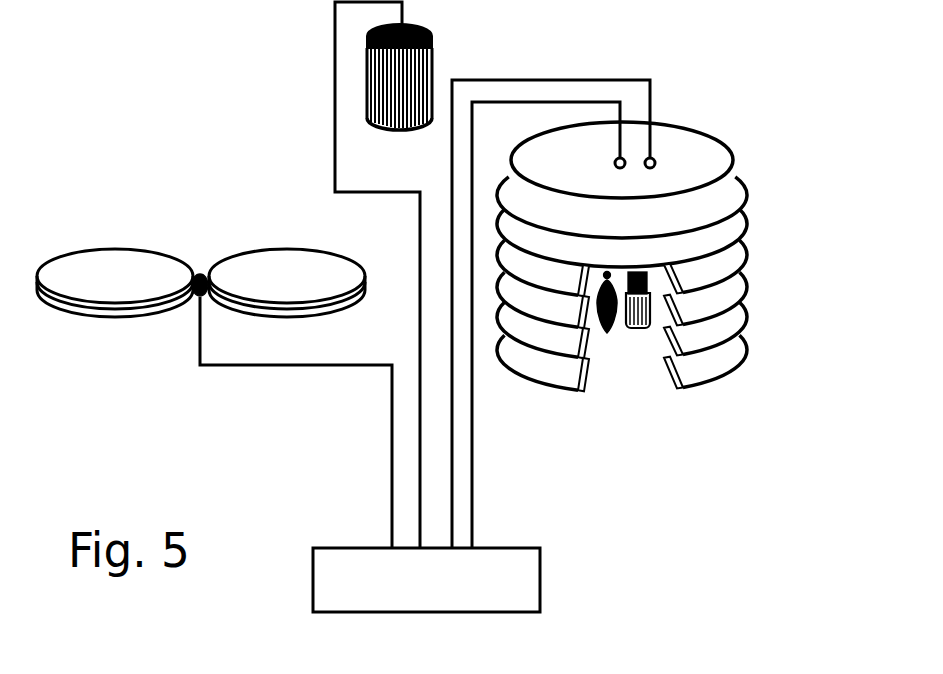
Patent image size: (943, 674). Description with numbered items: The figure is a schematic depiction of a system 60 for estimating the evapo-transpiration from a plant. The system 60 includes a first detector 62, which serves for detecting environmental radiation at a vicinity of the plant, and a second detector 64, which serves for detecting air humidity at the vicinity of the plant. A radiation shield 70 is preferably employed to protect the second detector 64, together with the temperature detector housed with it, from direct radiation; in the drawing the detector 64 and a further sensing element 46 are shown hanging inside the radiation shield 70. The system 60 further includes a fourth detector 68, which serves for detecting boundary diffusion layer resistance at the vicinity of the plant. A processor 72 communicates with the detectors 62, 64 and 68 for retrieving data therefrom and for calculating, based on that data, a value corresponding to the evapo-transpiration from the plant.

The sensor 46 is at (607, 333).
The system 60 is at (613, 40).
The first detector 62 is at (388, 97).
The second detector 64 is at (637, 329).
The fourth detector 68 is at (105, 255).
The radiation shield 70 is at (735, 195).
The processor 72 is at (530, 575).